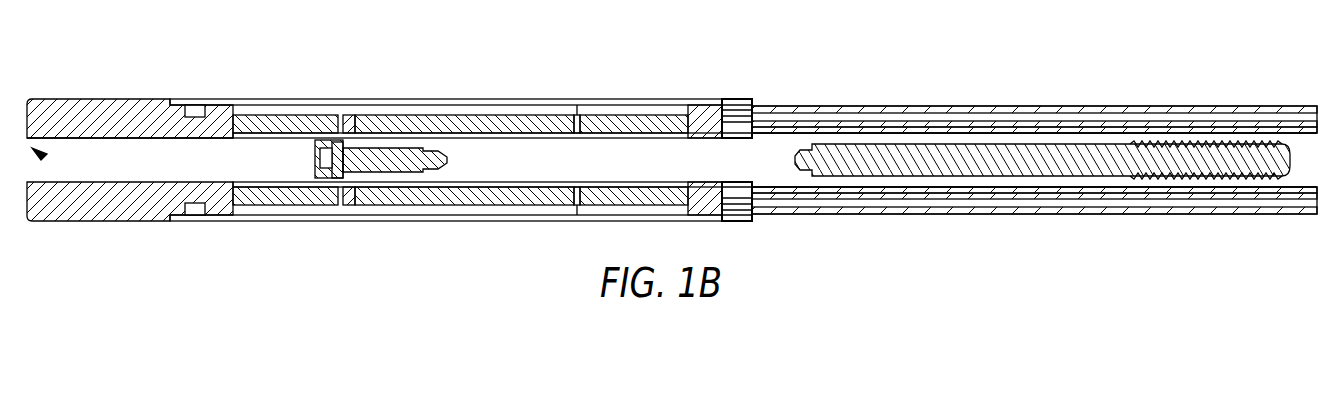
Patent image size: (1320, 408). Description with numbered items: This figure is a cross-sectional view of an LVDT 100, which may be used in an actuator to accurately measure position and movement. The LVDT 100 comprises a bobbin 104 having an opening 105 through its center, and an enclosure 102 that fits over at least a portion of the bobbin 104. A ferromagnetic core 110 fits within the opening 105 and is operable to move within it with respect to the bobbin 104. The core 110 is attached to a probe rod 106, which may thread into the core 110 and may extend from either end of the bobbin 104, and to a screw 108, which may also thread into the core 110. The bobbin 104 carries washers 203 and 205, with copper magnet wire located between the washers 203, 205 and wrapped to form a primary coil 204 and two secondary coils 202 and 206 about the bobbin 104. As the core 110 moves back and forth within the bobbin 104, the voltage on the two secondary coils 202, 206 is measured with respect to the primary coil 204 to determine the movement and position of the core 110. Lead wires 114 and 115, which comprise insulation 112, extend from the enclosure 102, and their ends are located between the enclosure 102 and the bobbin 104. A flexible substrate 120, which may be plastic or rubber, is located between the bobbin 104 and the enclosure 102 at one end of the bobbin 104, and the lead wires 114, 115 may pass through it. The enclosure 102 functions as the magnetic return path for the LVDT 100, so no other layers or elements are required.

The LVDT 100 is at (910, 75).
The enclosure 102 is at (200, 221).
The bobbin 104 is at (100, 113).
The opening 105 is at (30, 150).
The probe rod 106 is at (1057, 175).
The screw 108 is at (345, 150).
The ferromagnetic core 110 is at (782, 157).
The insulation 112 is at (1019, 106).
The lead wire 114 is at (735, 99).
The lead wire 115 is at (643, 212).
The flexible substrate 120 is at (752, 218).
The secondary coil 202 is at (299, 115).
The washer 203 is at (347, 116).
The primary coil 204 is at (503, 116).
The washer 205 is at (577, 116).
The secondary coil 206 is at (650, 117).